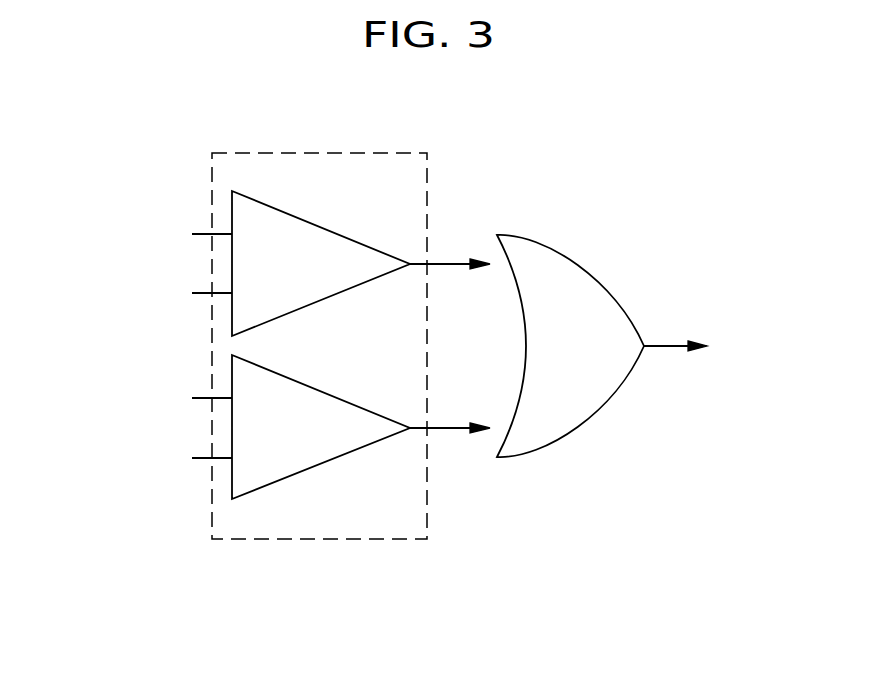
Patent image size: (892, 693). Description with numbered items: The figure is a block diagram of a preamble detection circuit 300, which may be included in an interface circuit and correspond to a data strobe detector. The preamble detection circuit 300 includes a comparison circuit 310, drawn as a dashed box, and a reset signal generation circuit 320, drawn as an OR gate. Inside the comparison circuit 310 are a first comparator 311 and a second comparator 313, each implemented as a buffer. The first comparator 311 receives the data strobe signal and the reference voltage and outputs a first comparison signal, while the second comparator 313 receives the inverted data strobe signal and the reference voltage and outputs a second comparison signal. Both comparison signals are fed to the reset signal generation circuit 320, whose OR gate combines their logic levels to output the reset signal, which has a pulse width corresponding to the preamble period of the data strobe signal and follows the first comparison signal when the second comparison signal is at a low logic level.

The preamble detection circuit 300 is at (757, 93).
The comparison circuit 310 is at (360, 152).
The first comparator 311 is at (323, 227).
The second comparator 313 is at (323, 391).
The reset signal generation circuit 320 is at (590, 267).